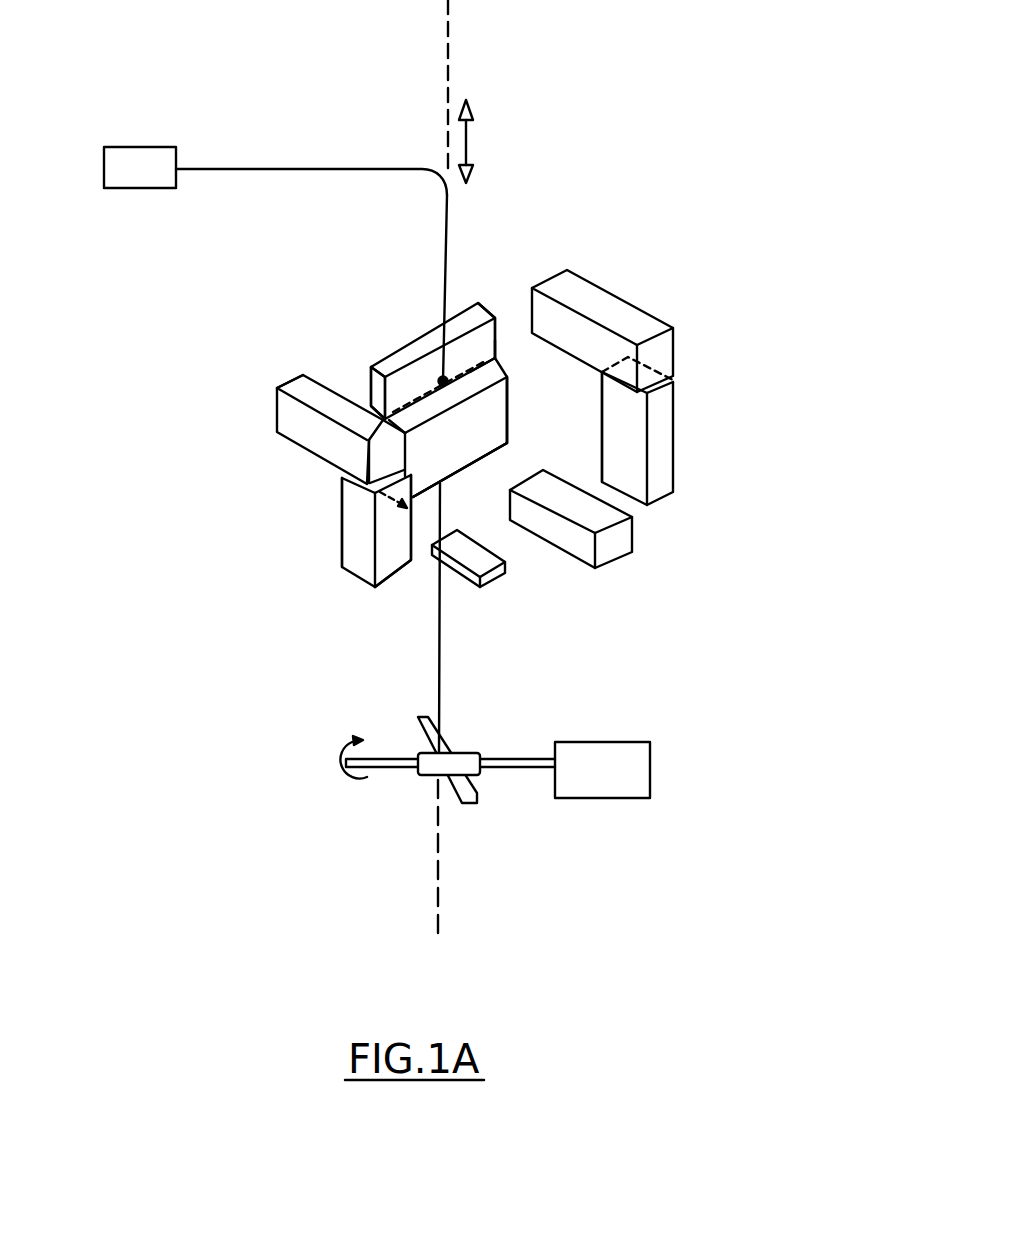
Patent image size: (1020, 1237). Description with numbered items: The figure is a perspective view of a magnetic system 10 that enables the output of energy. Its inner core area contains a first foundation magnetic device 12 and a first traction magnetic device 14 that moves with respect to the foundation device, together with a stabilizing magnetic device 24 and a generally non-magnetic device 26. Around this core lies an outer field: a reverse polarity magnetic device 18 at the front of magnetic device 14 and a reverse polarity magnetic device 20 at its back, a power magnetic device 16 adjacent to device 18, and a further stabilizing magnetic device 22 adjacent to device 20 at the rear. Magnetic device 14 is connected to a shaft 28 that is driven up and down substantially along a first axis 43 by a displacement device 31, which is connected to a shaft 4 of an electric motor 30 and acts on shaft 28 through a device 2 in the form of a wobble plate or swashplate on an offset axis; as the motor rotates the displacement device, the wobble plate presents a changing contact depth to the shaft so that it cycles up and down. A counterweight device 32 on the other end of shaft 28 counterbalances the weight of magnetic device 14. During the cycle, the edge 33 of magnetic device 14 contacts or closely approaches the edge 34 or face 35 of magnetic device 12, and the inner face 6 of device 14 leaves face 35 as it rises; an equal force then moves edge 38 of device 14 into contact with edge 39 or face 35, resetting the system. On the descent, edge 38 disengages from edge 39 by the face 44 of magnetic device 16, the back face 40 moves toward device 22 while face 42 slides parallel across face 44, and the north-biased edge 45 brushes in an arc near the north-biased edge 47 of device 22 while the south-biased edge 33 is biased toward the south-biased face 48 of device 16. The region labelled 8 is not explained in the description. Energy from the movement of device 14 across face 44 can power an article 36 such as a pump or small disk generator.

The wobble plate 2 is at (441, 736).
The shaft 4 is at (512, 768).
The inner face 6 is at (362, 448).
The sample region 8 is at (460, 437).
The magnetic system 10 is at (690, 177).
The first foundation magnetic device 12 is at (372, 365).
The first traction magnetic device 14 is at (510, 432).
The power magnetic device 16 is at (363, 580).
The reverse polarity magnetic device 18 is at (288, 438).
The reverse polarity magnetic device 20 is at (675, 352).
The stabilizing magnetic device 22 is at (675, 464).
The stabilizing magnetic device 24 is at (615, 563).
The non-magnetic device 26 is at (494, 578).
The shaft 28 is at (445, 239).
The electric motor 30 is at (586, 785).
The displacement device 31 is at (421, 775).
The counterweight device 32 is at (122, 147).
The edge 33 is at (298, 374).
The edge 34 is at (384, 388).
The face 35 is at (417, 387).
The article 36 is at (454, 478).
The edge 38 is at (488, 360).
The edge 39 is at (512, 332).
The back face 40 is at (518, 385).
The face 42 is at (365, 494).
The first axis 43 is at (450, 66).
The face 44 is at (414, 557).
The edge 45 is at (509, 410).
The edge 47 is at (602, 444).
The face 48 is at (342, 528).